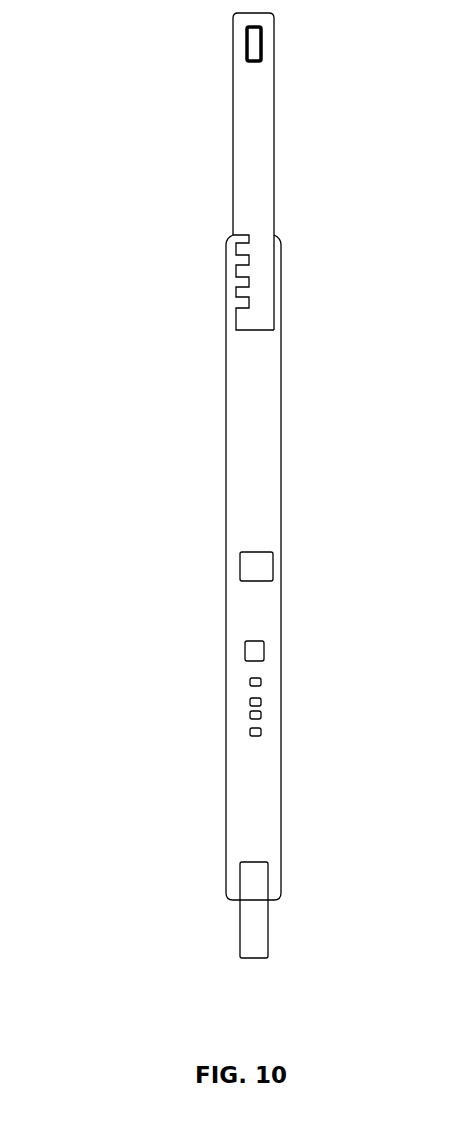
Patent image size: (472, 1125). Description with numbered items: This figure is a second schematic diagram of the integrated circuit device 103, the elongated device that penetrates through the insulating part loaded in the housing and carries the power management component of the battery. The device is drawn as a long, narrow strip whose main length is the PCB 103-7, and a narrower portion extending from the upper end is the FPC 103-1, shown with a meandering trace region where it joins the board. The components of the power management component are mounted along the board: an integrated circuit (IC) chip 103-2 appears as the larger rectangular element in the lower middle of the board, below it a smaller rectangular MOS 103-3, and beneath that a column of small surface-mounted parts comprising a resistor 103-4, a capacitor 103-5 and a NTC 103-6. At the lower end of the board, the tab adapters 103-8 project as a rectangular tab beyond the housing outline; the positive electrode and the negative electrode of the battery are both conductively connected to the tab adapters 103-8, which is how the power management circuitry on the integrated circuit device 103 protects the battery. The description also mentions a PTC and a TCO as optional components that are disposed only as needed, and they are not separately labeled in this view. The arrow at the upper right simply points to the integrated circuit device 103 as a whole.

The integrated circuit device 103 is at (320, 71).
The FPC 103-1 is at (245, 157).
The integrated circuit (IC) chip 103-2 is at (243, 560).
The MOS 103-3 is at (250, 650).
The resistor 103-4 is at (250, 682).
The capacitor 103-5 is at (249, 713).
The NTC 103-6 is at (249, 732).
The PCB 103-7 is at (262, 448).
The tab adapters 103-8 is at (249, 922).